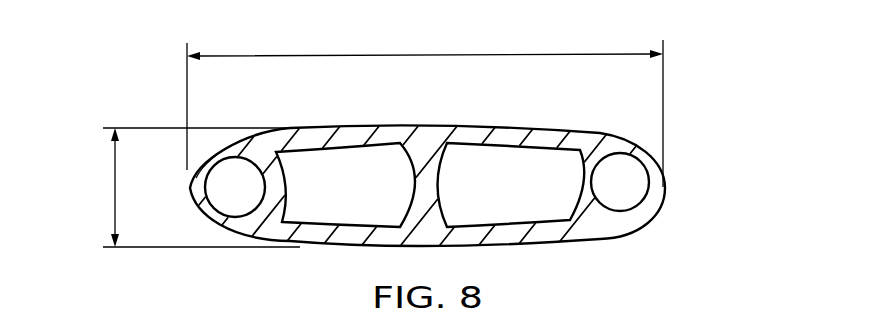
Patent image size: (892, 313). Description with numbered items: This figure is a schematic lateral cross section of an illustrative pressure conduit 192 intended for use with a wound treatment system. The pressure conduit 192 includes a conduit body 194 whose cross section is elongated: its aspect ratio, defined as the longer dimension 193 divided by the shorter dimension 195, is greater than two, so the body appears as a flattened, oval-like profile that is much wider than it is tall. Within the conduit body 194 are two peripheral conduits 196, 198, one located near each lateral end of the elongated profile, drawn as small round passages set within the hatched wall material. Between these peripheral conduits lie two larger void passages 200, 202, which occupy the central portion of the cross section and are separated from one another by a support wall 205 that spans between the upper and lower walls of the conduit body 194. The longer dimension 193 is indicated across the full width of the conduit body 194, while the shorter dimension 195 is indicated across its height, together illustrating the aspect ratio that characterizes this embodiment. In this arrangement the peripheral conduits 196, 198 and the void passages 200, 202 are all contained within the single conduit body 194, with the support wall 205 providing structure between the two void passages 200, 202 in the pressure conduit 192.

The pressure conduit 192 is at (570, 128).
The longer dimension 193 is at (423, 53).
The conduit body 194 is at (548, 242).
The shorter dimension 195 is at (113, 188).
The peripheral conduit 196 is at (222, 195).
The peripheral conduit 198 is at (623, 193).
The void passage 200 is at (365, 200).
The void passage 202 is at (525, 178).
The support wall 205 is at (437, 191).